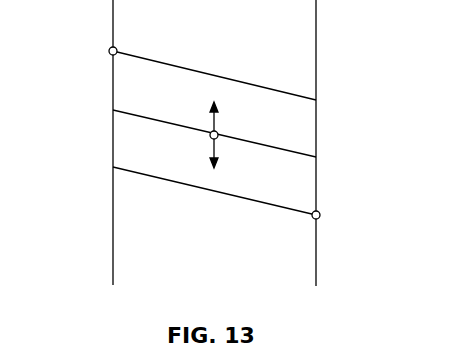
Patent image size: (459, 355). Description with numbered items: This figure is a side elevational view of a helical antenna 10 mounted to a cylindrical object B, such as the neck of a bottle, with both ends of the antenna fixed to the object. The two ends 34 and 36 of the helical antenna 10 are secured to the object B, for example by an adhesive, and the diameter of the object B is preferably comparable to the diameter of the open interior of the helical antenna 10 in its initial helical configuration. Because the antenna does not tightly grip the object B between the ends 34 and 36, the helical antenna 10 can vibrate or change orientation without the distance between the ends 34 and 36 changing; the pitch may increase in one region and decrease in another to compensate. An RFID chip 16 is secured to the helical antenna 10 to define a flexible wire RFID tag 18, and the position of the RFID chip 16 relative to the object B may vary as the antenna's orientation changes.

The helical antenna 10 is at (203, 72).
The RFID chip 16 is at (211, 137).
The flexible wire RFID tag 18 is at (216, 205).
The first end of the helical antenna 34 is at (109, 49).
The second end of the helical antenna 36 is at (320, 218).
The object B is at (318, 33).